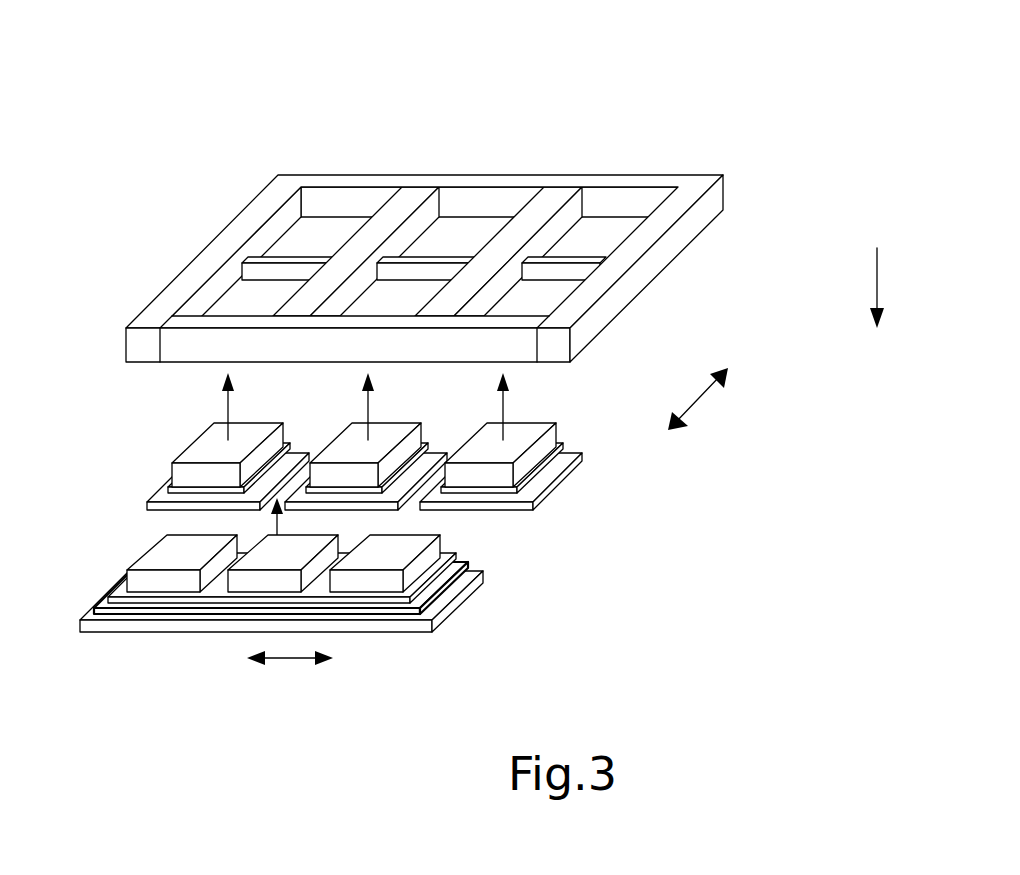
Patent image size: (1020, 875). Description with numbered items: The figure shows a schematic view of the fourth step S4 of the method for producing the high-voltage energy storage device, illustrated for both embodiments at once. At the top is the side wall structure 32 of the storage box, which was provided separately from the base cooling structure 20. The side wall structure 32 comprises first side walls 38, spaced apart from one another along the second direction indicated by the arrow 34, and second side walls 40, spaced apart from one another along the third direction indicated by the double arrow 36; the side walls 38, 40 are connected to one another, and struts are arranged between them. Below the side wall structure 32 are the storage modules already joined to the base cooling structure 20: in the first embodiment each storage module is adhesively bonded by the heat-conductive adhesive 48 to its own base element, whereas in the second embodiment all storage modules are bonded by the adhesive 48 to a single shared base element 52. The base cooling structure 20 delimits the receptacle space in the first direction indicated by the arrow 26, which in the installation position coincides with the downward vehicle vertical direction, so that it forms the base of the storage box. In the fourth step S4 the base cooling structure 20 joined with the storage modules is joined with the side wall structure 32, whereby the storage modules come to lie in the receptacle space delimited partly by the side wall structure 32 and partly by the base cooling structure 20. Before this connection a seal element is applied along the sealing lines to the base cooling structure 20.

The base cooling structure 20 is at (355, 549).
The arrow 26 is at (877, 288).
The side wall structure 32 is at (474, 215).
The arrow 34 is at (700, 402).
The double arrow 36 is at (292, 662).
The first side walls 38 is at (497, 195).
The second side walls 40 is at (232, 234).
The heat-conductive adhesive 48 is at (215, 599).
The base element 52 is at (133, 633).
The fourth step S4 is at (760, 170).